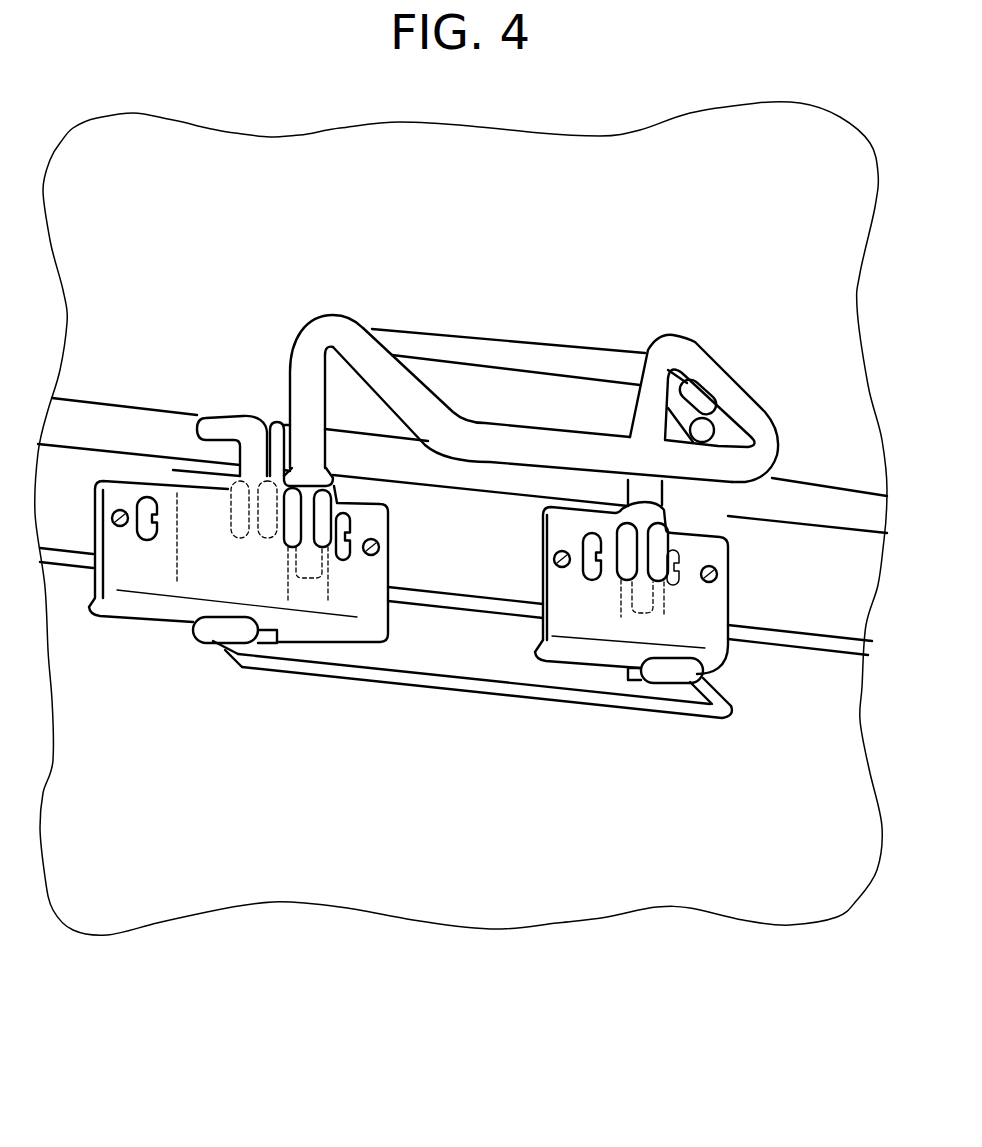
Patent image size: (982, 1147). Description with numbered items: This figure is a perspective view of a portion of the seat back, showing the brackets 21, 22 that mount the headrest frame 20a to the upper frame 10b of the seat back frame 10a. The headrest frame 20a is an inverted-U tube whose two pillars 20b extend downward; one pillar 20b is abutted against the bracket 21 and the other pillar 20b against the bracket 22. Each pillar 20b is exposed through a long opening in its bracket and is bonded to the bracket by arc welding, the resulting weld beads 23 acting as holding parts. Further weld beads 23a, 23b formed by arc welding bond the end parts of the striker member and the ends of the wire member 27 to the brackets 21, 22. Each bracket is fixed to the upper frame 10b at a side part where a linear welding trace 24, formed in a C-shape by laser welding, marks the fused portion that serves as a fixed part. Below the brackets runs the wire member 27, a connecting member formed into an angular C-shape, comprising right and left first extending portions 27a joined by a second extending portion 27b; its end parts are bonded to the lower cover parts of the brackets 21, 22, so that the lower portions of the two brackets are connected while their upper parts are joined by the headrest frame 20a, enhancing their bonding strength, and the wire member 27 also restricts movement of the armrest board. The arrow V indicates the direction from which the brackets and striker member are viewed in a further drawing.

The seat back frame 10a is at (412, 883).
The upper frame 10b is at (833, 618).
The headrest frame 20a is at (744, 360).
The pillar 20b is at (297, 410).
The bracket 21 is at (156, 672).
The bracket 22 is at (752, 680).
The weld bead 23 is at (322, 574).
The weld bead 23a is at (240, 520).
The weld bead 23b is at (197, 632).
The welding trace 24 is at (133, 540).
The wire member 27 is at (455, 686).
The first extending portion 27a is at (226, 655).
The second extending portion 27b is at (397, 681).
The V direction V is at (193, 317).